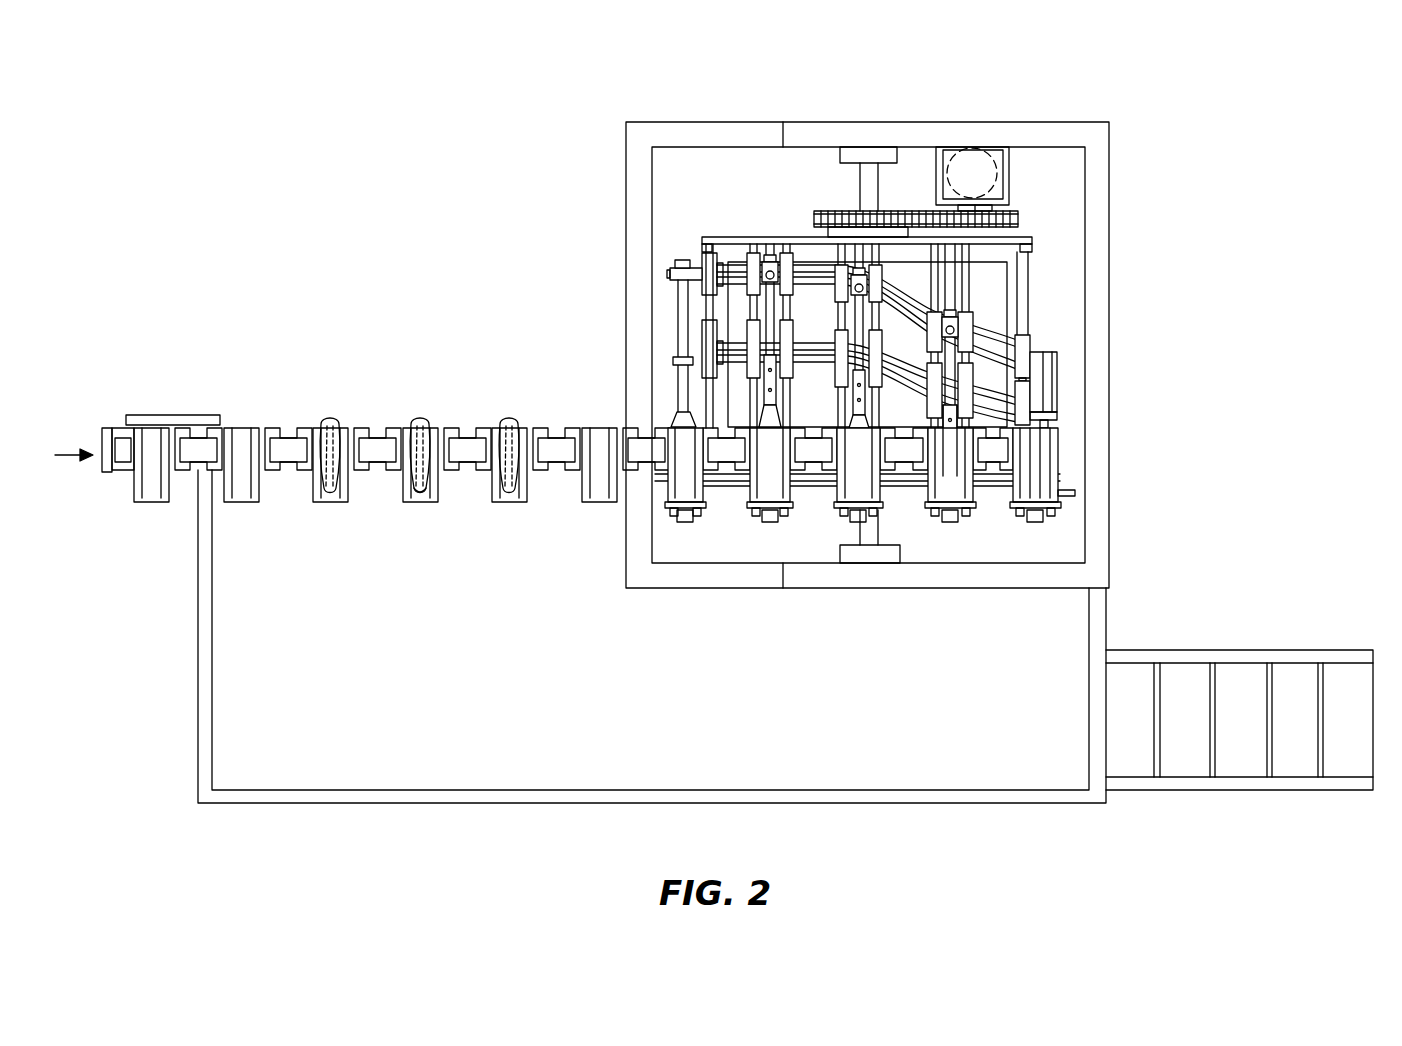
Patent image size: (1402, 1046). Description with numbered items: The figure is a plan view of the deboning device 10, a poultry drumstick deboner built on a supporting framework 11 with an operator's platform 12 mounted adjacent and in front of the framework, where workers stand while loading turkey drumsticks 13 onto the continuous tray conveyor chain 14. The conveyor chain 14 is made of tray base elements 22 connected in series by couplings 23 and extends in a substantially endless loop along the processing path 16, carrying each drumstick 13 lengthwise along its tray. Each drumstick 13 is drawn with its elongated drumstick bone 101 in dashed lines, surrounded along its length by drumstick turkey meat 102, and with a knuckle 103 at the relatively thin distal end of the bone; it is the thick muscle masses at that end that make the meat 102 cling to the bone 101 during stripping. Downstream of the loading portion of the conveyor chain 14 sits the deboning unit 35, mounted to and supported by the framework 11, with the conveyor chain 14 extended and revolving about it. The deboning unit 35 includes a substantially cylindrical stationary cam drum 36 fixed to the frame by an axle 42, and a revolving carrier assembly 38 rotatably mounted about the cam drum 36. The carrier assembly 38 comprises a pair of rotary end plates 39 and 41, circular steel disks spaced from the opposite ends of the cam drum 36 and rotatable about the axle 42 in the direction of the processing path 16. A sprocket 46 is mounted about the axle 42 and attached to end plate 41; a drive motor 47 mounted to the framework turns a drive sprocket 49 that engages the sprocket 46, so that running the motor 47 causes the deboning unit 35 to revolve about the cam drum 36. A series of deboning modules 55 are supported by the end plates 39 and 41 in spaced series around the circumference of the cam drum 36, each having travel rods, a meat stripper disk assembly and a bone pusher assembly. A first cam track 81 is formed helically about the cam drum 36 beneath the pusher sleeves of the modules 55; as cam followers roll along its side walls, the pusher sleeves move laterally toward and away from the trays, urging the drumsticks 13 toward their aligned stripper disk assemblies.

The deboning device 10 is at (1155, 210).
The supporting framework 11 is at (806, 131).
The operator's platform 12 is at (352, 795).
The turkey drumstick 13 is at (329, 418).
The tray conveyor chain 14 is at (387, 486).
The processing path 16 is at (67, 452).
The tray base element 22 is at (657, 468).
The coupling 23 is at (548, 458).
The deboning unit 35 is at (1062, 312).
The stationary cam drum 36 is at (990, 285).
The revolving carrier assembly 38 is at (730, 226).
The rotary end plate 39 is at (1005, 240).
The rotary end plate 41 is at (805, 238).
The axle 42 is at (870, 526).
The sprocket 46 is at (838, 211).
The drive motor 47 is at (972, 165).
The drive sprocket 49 is at (1012, 205).
The deboning module 55 is at (666, 302).
The first cam track 81 is at (822, 346).
The drumstick bone 101 is at (518, 427).
The drumstick turkey meat 102 is at (505, 422).
The knuckle 103 is at (422, 493).